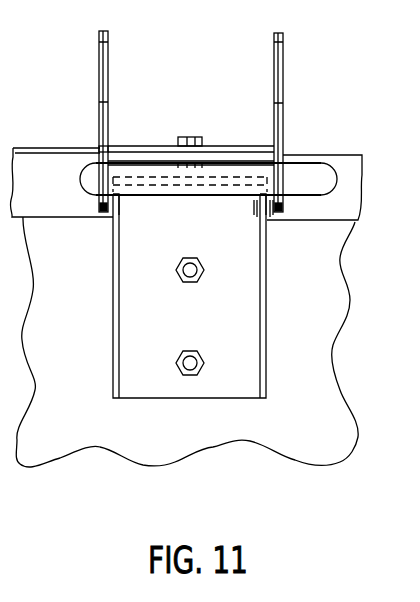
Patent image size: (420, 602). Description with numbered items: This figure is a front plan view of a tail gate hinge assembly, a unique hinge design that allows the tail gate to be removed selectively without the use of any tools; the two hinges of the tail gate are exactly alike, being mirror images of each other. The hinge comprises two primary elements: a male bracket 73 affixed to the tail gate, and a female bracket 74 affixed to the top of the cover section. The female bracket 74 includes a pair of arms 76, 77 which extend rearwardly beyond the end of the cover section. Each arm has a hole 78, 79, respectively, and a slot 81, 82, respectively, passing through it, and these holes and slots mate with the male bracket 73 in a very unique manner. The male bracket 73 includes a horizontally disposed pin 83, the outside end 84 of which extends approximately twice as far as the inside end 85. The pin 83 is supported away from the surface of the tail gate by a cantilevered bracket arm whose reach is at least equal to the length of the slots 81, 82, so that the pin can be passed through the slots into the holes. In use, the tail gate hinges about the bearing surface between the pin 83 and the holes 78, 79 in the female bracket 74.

The male bracket 73 is at (247, 322).
The female bracket 74 is at (127, 145).
The arm 76 is at (102, 120).
The arm 77 is at (280, 130).
The hole 78 is at (100, 203).
The hole 79 is at (287, 205).
The slot 81 is at (100, 152).
The slot 82 is at (285, 158).
The pin 83 is at (157, 192).
The outside end of pin 84 is at (340, 182).
The inside end of pin 85 is at (82, 183).